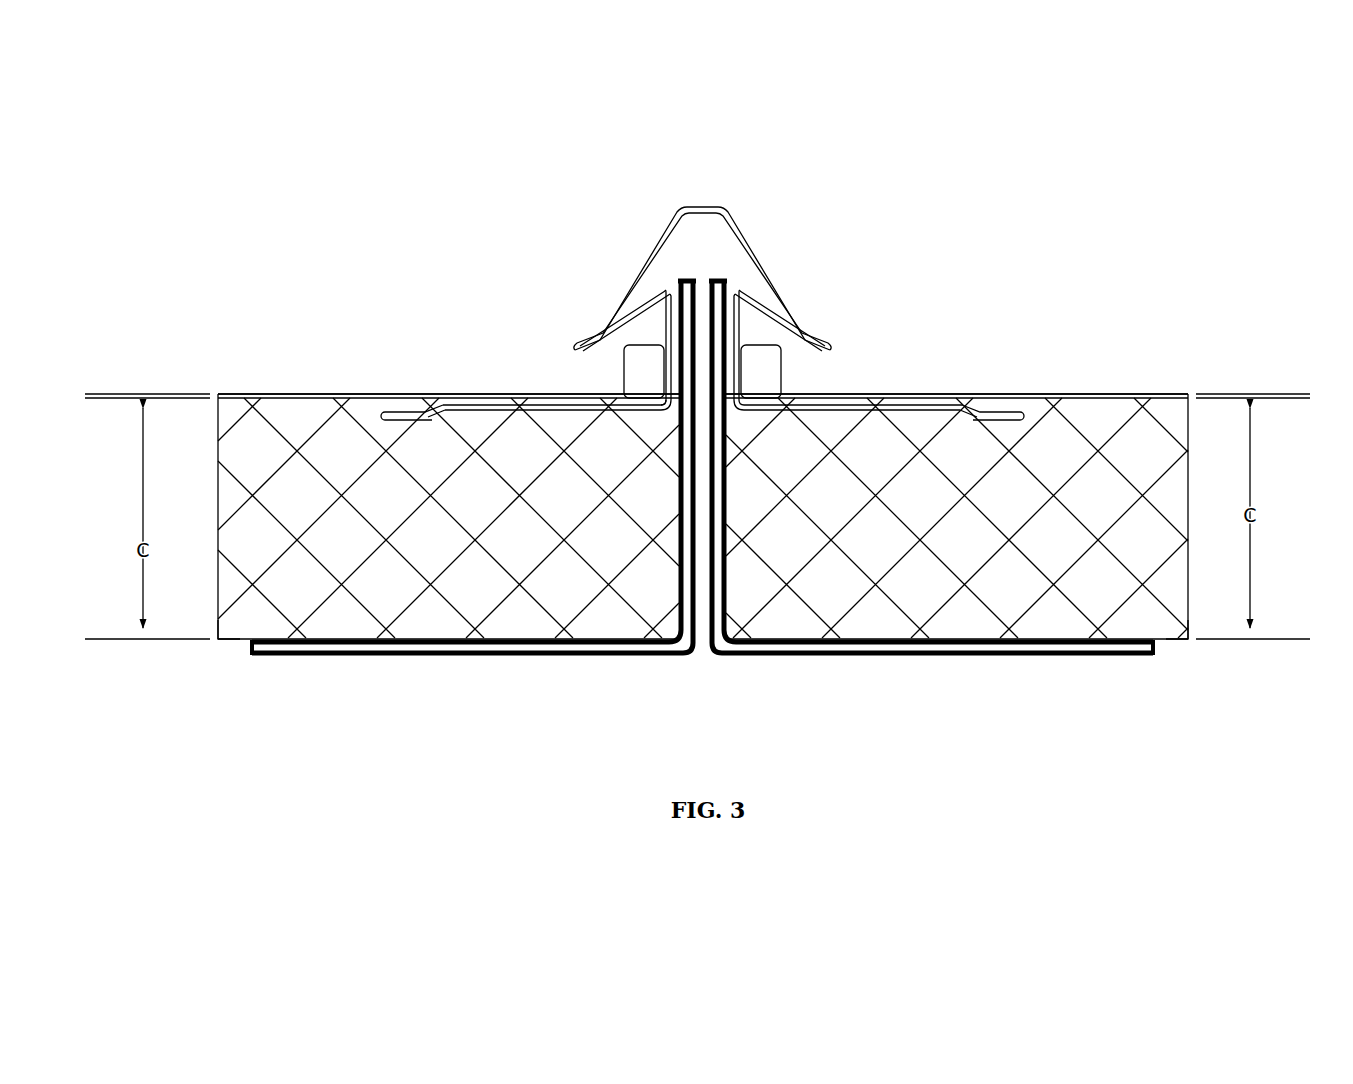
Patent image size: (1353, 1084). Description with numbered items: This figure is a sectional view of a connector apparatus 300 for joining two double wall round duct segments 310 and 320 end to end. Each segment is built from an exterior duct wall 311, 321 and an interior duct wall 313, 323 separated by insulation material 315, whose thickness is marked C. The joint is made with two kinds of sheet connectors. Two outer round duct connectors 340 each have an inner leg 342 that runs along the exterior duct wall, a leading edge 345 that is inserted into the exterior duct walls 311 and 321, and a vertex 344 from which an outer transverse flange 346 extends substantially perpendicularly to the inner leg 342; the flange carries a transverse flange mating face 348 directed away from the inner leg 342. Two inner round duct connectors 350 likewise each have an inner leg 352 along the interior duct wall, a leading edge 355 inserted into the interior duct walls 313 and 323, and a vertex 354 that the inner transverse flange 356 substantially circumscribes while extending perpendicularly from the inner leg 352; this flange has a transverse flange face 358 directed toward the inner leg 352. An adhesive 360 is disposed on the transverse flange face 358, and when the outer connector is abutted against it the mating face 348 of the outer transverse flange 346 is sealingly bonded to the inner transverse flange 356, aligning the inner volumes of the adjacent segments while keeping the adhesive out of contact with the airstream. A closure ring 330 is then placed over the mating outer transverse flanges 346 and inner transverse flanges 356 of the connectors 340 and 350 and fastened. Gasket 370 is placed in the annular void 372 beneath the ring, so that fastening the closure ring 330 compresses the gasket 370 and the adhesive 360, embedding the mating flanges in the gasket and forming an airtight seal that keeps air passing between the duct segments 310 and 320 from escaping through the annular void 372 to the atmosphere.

The connector apparatus 300 is at (177, 243).
The double wall round duct segment 310 is at (98, 628).
The exterior duct wall 311 is at (337, 401).
The interior duct wall 313 is at (230, 645).
The insulation material 315 is at (385, 541).
The double wall round duct segment 320 is at (1295, 628).
The exterior duct wall 321 is at (1068, 401).
The interior duct wall 323 is at (1173, 648).
The closure ring 330 is at (747, 250).
The outer round duct connector 340 is at (699, 406).
The inner leg 342 is at (477, 398).
The vertex 344 is at (688, 423).
The leading edge 345 is at (376, 425).
The outer transverse flange 346 is at (660, 333).
The transverse flange mating face 348 is at (665, 382).
The inner round duct connector 350 is at (701, 496).
The inner leg 352 is at (373, 633).
The vertex 354 is at (716, 656).
The leading edge 355 is at (248, 658).
The inner transverse flange 356 is at (712, 513).
The transverse flange face 358 is at (708, 584).
The adhesive 360 is at (680, 295).
The gasket 370 is at (697, 269).
The annular void 372 is at (705, 282).